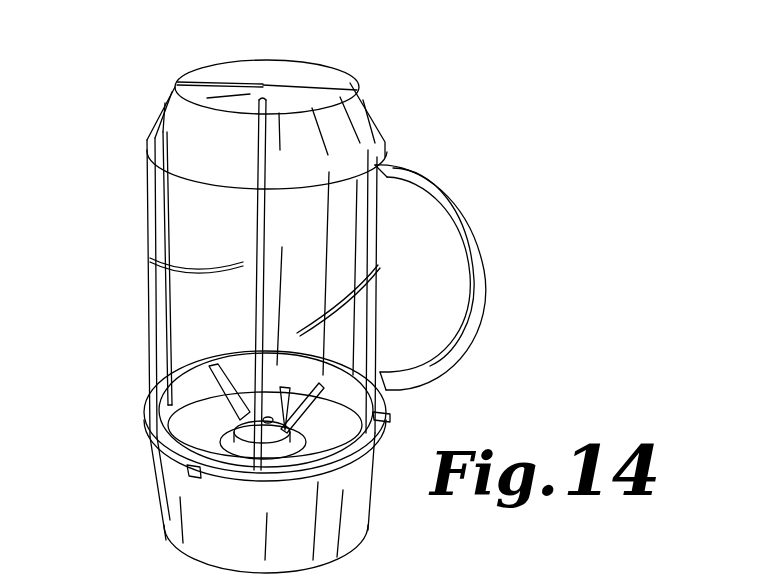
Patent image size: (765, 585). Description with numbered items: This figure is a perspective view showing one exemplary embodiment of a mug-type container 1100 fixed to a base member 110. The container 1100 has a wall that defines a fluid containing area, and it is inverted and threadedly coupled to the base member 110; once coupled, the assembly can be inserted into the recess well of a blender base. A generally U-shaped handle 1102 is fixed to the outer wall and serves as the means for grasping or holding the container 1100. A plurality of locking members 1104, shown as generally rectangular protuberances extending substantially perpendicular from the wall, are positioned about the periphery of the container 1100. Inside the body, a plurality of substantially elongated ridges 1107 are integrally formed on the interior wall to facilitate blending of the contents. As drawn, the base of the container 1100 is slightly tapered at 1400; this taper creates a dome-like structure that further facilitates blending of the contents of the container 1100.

The mug-type container 1100 is at (324, 64).
The taper 1400 is at (355, 150).
The handle 1102 is at (447, 200).
The elongated ridges 1107 is at (263, 124).
The locking members 1104 is at (393, 413).
The base member 110 is at (330, 548).